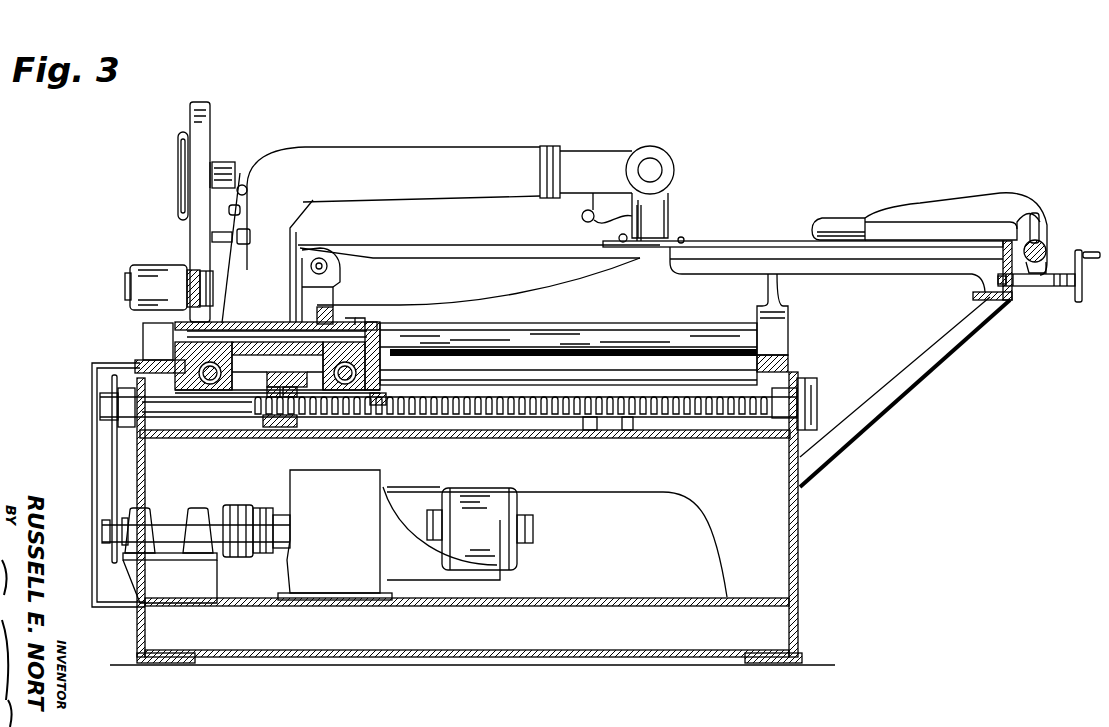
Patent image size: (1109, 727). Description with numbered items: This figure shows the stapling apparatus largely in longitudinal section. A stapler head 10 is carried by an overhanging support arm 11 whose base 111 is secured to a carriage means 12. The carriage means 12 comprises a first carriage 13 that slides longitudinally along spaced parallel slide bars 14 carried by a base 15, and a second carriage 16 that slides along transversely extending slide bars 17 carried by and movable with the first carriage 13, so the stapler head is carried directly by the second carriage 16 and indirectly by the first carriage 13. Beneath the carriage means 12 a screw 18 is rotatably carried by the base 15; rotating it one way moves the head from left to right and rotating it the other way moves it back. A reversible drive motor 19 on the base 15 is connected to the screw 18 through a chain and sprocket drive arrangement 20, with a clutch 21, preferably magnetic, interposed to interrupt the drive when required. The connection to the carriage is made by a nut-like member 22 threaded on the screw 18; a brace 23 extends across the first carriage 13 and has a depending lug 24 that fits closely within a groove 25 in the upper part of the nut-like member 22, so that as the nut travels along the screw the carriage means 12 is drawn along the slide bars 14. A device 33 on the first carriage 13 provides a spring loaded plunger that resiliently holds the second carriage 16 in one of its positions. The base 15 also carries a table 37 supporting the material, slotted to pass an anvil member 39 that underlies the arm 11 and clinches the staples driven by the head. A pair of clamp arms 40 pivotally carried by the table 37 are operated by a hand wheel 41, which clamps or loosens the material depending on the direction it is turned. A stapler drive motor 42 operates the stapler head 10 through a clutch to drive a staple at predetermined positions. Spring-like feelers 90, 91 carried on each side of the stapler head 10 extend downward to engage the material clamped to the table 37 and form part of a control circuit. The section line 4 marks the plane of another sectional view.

The section line 4- 4 is at (77, 403).
The stapler head 10 is at (673, 144).
The overhanging support arm 11 is at (452, 146).
The carriage means 12 is at (347, 317).
The first carriage 13 is at (355, 325).
The slide bars 14 is at (600, 340).
The base 15 is at (800, 534).
The second carriage 16 is at (273, 342).
The slide bars 17 is at (203, 393).
The screw 18 is at (581, 407).
The reversible drive motor 19 is at (478, 520).
The chain and sprocket drive arrangement 20 is at (107, 471).
The clutch 21 is at (240, 532).
The nut-like member 22 is at (273, 424).
The brace 23 is at (268, 372).
The depending lug 24 is at (253, 394).
The groove 25 is at (297, 392).
The device 33 is at (381, 404).
The table 37 is at (724, 239).
The anvil member 39 is at (450, 250).
The clamp arms 40 is at (887, 217).
The hand wheel 41 is at (1077, 298).
The stapler drive motor 42 is at (143, 270).
The feeler 90 is at (676, 236).
The feeler 91 is at (587, 222).
The base 111 is at (292, 256).